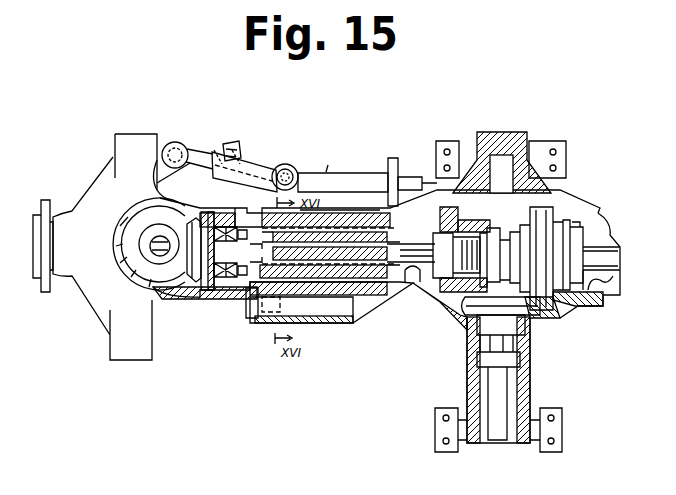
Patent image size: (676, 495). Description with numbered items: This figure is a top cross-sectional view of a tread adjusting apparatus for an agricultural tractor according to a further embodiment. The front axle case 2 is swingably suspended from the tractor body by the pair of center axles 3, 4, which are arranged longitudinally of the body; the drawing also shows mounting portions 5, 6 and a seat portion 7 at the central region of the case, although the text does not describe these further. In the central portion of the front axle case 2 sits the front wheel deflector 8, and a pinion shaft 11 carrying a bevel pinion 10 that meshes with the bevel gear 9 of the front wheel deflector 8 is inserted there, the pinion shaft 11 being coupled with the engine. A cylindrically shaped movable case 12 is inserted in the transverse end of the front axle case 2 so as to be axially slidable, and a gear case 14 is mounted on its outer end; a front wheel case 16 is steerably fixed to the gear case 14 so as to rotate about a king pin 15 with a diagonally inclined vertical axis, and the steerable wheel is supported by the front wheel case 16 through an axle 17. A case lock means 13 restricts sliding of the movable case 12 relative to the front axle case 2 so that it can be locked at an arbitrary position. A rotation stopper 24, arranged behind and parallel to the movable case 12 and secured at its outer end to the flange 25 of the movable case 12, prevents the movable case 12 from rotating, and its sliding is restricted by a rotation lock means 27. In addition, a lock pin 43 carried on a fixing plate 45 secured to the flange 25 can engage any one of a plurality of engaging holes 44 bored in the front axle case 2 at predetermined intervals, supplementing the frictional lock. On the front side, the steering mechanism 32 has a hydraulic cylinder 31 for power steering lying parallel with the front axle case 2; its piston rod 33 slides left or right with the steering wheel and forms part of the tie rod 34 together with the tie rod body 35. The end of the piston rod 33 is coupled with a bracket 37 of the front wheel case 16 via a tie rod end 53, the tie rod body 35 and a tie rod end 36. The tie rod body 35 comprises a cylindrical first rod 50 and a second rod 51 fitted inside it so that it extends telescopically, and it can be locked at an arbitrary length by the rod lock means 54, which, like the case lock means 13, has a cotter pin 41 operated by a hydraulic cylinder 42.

The front axle case 2 is at (392, 295).
The center axle 3 is at (521, 142).
The center axle 4 is at (526, 390).
The mounting flange 5 is at (476, 146).
The mounting flange 6 is at (474, 443).
The valve seat 7 is at (547, 300).
The front wheel deflector 8 is at (573, 214).
The bevel gear 9 is at (563, 290).
The bevel pinion 10 is at (478, 315).
The pinion shaft 11 is at (500, 343).
The movable case 12 is at (338, 282).
The case lock means 13 is at (322, 208).
The gear case 14 is at (188, 278).
The king pin 15 is at (153, 254).
The front wheel case 16 is at (98, 208).
The axle 17 is at (47, 250).
The rotation stopper 24 is at (320, 306).
The flange 25 is at (242, 312).
The rotation lock means 27 is at (262, 318).
The hydraulic cylinder 31 is at (402, 162).
The steering mechanism 32 is at (414, 129).
The piston rod 33 is at (357, 180).
The tie rod 34 is at (328, 165).
The tie rod body 35 is at (259, 160).
The tie rod end 36 is at (172, 143).
The bracket 37 is at (156, 162).
The cotter pin 41 is at (221, 152).
The hydraulic cylinder 42 is at (238, 146).
The lock pin 43 is at (420, 282).
The engaging holes 44 is at (366, 276).
The fixing plate 45 is at (199, 282).
The first rod 50 is at (283, 165).
The second rod 51 is at (199, 150).
The tie rod end 53 is at (292, 172).
The rod lock means 54 is at (234, 133).